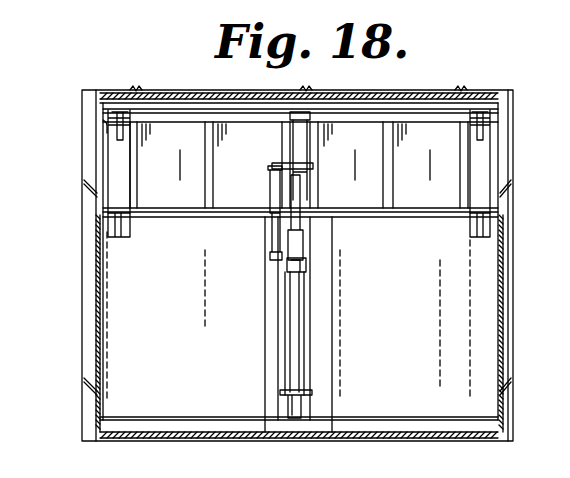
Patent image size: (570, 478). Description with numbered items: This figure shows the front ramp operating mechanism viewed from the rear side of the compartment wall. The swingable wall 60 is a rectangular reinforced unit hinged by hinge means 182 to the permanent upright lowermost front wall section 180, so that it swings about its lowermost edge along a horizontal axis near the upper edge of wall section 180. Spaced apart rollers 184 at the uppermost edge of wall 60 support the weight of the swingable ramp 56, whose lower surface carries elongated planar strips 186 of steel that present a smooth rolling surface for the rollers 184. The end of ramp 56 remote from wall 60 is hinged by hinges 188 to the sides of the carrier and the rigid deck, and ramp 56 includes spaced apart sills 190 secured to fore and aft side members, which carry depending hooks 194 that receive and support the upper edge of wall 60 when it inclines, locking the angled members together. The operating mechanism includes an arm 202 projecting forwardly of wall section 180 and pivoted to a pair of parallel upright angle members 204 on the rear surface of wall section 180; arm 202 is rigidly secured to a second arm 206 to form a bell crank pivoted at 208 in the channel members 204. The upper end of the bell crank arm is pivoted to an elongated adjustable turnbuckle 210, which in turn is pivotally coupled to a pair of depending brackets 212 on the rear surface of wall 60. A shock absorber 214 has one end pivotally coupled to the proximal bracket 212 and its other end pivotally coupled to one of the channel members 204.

The ramp 56 is at (256, 94).
The swingable wall 60 is at (123, 172).
The lowermost front wall section 180 is at (103, 347).
The hinge means 182 is at (130, 214).
The rollers 184 is at (125, 120).
The planar strips 186 is at (470, 120).
The hinges 188 is at (106, 123).
The sills 190 is at (430, 107).
The depending hooks 194 is at (122, 138).
The arm 202 is at (297, 410).
The upright angle members 204 is at (280, 314).
The second arm 206 is at (293, 356).
The pivot 208 is at (302, 270).
The turnbuckle 210 is at (303, 246).
The depending brackets 212 is at (306, 150).
The shock absorber 214 is at (272, 194).